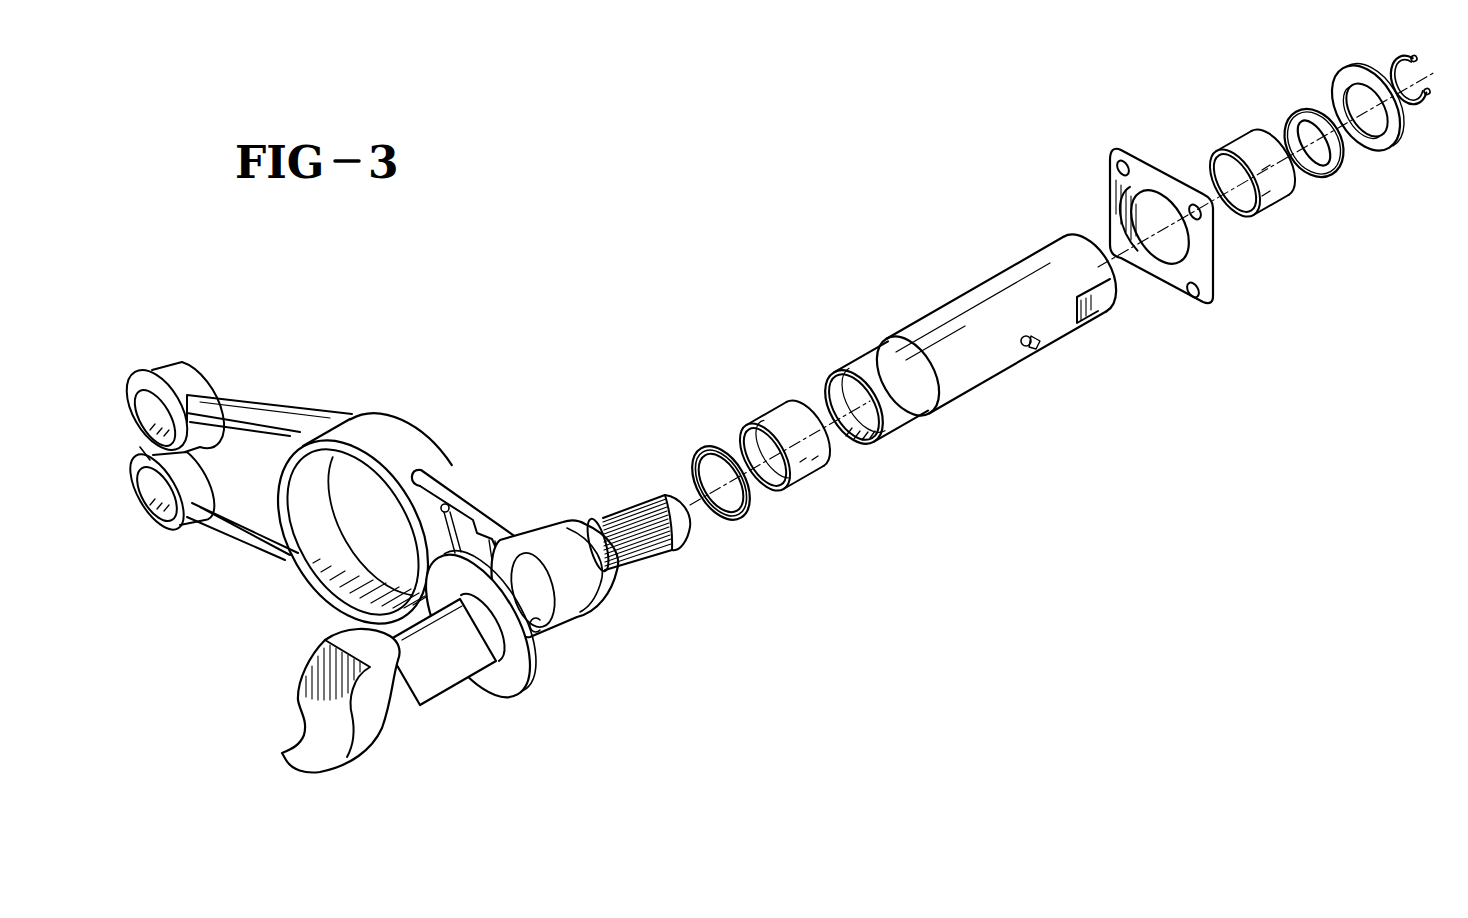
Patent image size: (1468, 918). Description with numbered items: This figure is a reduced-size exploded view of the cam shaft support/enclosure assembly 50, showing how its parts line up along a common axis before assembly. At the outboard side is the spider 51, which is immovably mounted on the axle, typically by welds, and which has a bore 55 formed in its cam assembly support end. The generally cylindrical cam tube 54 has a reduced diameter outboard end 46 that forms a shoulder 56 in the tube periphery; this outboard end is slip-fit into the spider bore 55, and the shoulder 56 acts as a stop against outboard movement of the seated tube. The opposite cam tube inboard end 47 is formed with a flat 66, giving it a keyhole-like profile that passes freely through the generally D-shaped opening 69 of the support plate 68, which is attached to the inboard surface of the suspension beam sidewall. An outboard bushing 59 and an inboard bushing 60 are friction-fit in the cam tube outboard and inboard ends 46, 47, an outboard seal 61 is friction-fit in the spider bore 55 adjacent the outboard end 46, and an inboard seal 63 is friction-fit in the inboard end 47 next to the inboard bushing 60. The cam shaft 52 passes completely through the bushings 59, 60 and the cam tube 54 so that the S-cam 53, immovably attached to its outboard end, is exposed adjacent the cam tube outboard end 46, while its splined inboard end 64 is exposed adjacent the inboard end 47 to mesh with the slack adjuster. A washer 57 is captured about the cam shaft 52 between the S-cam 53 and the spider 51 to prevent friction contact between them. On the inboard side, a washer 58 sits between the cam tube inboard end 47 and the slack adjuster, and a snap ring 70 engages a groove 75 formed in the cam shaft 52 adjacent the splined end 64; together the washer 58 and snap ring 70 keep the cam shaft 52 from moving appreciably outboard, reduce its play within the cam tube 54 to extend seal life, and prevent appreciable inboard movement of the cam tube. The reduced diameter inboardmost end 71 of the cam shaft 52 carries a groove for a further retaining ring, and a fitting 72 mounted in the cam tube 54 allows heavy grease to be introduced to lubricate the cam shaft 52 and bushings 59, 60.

The cam tube outboard end 46 is at (898, 410).
The cam tube inboard end 47 is at (1063, 272).
The cam shaft support/enclosure assembly 50 is at (979, 336).
The spider 51 is at (378, 418).
The cam shaft 52 is at (420, 673).
The S-cam 53 is at (323, 737).
The cam tube 54 is at (991, 320).
The bore 55 is at (540, 628).
The shoulder 56 is at (883, 353).
The washer 57 is at (497, 667).
The washer 58 is at (1378, 147).
The outboard bushing 59 is at (783, 410).
The inboard bushing 60 is at (1243, 150).
The outboard seal 61 is at (703, 460).
The inboard seal 63 is at (1302, 110).
The splined inboard end 64 is at (651, 498).
The flat 66 is at (1100, 298).
The support plate 68 is at (1176, 209).
The opening 69 is at (1158, 205).
The snap ring 70 is at (1426, 95).
The reduced diameter inboardmost end 71 is at (688, 518).
The fitting 72 is at (1036, 345).
The groove 75 is at (596, 523).